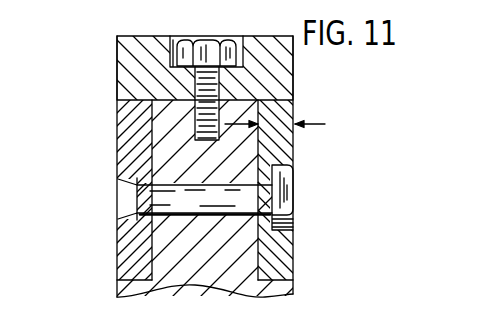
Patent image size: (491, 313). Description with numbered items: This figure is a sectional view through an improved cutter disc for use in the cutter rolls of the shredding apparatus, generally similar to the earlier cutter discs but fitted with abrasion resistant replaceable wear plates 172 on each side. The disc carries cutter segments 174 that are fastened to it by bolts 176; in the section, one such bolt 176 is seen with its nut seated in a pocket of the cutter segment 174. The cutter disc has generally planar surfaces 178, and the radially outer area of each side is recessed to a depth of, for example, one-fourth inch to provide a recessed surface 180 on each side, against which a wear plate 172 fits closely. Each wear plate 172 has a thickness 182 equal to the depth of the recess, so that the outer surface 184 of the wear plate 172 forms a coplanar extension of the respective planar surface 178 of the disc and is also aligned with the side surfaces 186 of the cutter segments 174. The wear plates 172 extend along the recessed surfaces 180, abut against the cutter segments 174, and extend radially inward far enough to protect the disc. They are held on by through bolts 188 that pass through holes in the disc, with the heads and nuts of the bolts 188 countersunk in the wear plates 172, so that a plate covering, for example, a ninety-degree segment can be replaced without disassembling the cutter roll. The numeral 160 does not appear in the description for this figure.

The locking assembly 160 is at (205, 148).
The wear plates 172 is at (117, 254).
The cutter segments 174 is at (120, 62).
The bolts 176 is at (207, 42).
The planar surfaces 178 is at (117, 291).
The recessed surface 180 is at (152, 128).
The thickness 182 is at (325, 124).
The outer surface 184 is at (295, 237).
The side surfaces 186 is at (295, 57).
The through bolts 188 is at (178, 183).